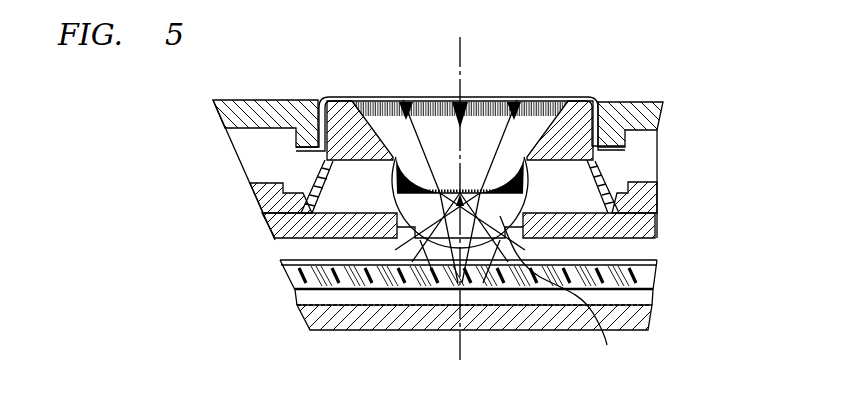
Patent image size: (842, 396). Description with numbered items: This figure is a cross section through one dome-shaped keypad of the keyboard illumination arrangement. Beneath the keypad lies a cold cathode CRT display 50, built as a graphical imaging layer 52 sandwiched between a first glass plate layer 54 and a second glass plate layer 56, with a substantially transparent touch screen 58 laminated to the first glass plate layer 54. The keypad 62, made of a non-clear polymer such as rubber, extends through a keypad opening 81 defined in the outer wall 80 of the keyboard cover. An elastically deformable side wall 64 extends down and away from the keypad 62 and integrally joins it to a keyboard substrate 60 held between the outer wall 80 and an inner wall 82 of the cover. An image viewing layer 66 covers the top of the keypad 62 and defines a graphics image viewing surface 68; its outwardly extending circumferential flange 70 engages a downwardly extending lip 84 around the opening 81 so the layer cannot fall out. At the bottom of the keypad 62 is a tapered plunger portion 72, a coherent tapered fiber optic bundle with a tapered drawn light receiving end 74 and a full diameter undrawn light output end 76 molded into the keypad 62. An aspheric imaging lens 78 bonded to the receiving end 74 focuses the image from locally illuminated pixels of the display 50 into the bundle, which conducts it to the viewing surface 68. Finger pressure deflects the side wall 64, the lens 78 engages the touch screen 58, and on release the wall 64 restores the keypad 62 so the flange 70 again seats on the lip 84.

The cold cathode CRT display 50 is at (266, 258).
The graphical imaging layer 52 is at (655, 291).
The first glass plate layer 54 is at (654, 274).
The second glass plate layer 56 is at (650, 325).
The touch screen 58 is at (652, 258).
The keyboard substrate 60 is at (657, 196).
The keypad 62 is at (333, 97).
The side wall 64 is at (323, 161).
The image viewing layer 66 is at (590, 99).
The graphics image viewing surface 68 is at (517, 100).
The circumferential flange 70 is at (300, 157).
The plunger portion 72 is at (545, 100).
The tapered drawn light receiving end 74 is at (398, 186).
The full diameter undrawn light output end 76 is at (350, 100).
The imaging lens 78 is at (564, 293).
The outer wall 80 is at (660, 114).
The keypad opening 81 is at (318, 100).
The inner wall 82 is at (268, 226).
The downwardly extending lip 84 is at (613, 140).